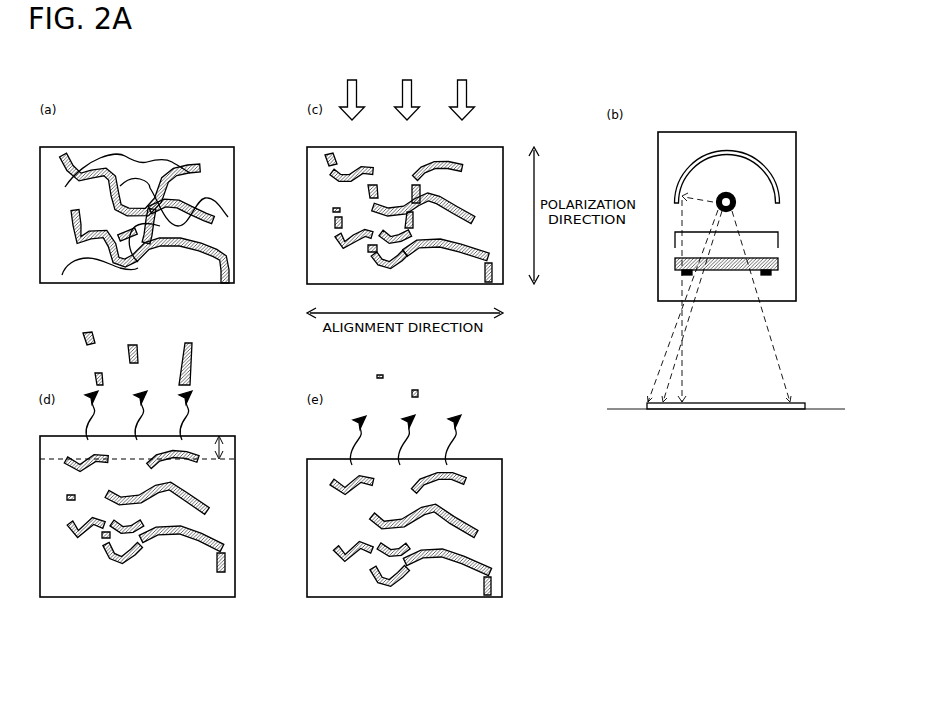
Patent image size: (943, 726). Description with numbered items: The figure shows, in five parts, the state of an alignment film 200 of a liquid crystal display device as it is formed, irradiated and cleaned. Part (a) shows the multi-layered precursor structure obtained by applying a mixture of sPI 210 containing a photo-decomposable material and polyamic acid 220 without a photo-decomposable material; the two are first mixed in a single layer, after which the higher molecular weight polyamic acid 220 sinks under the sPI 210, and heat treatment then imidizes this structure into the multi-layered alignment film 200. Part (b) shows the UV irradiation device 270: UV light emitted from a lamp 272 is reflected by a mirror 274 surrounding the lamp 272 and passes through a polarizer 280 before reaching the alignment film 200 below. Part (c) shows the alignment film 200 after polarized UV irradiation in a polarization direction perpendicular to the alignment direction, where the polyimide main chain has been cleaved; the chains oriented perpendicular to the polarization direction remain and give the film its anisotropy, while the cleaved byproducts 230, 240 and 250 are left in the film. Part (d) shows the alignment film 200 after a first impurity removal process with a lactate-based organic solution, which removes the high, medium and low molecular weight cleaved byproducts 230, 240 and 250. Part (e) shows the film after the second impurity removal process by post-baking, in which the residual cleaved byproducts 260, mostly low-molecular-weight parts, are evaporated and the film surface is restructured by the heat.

The alignment film 200 is at (226, 147).
The sPI with a photo-decomposable material 210 is at (188, 167).
The polyamic acid without a photo-decomposable material 220 is at (133, 158).
The cleaved byproduct 230 is at (413, 185).
The cleaved byproduct 240 is at (324, 158).
The cleaved byproduct 250 is at (492, 274).
The residual cleaved byproducts 260 is at (418, 392).
The UV irradiation device 270 is at (797, 132).
The lamp 272 is at (726, 193).
The mirror 274 is at (712, 152).
The polarizer 280 is at (675, 262).